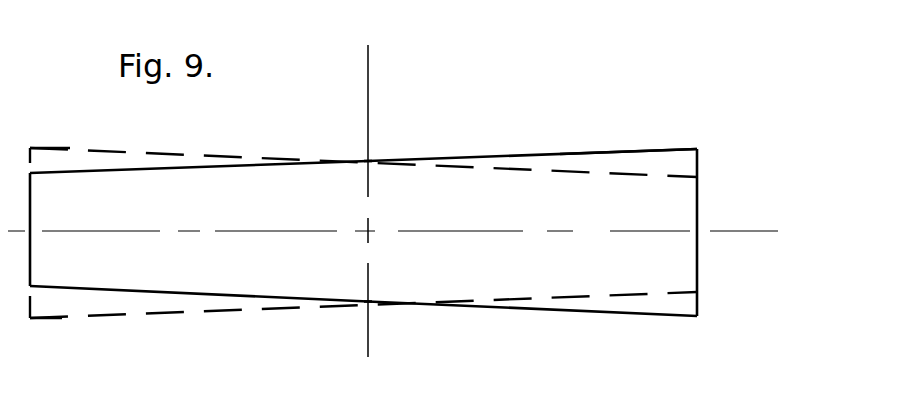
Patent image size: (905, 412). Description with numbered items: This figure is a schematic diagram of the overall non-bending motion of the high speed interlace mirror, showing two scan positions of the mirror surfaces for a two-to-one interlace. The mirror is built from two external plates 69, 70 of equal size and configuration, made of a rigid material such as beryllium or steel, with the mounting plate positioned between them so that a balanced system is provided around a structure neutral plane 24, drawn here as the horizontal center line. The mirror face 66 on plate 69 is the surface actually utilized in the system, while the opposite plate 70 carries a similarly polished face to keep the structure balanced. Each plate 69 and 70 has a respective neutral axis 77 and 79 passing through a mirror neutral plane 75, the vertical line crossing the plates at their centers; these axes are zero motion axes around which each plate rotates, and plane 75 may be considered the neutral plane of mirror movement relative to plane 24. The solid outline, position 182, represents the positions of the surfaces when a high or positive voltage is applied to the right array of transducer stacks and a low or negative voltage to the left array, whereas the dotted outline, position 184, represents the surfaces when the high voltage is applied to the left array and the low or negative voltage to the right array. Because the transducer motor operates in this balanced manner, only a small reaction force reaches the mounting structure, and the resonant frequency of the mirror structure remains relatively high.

The structure neutral plane 24 is at (745, 235).
The mirror face 66 is at (530, 153).
The external plate 69 is at (100, 171).
The external plate 70 is at (200, 296).
The mirror neutral plane 75 is at (368, 117).
The neutral axis 77 is at (369, 164).
The neutral axis 79 is at (362, 306).
The position 182 is at (595, 152).
The dotted position 184 is at (608, 177).